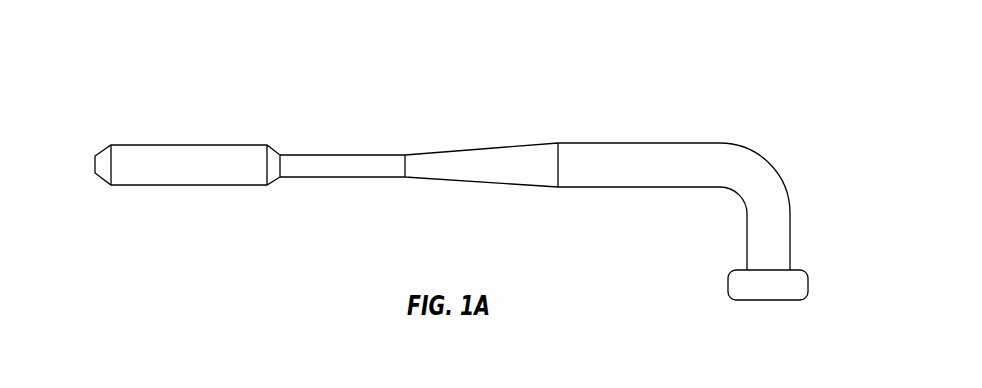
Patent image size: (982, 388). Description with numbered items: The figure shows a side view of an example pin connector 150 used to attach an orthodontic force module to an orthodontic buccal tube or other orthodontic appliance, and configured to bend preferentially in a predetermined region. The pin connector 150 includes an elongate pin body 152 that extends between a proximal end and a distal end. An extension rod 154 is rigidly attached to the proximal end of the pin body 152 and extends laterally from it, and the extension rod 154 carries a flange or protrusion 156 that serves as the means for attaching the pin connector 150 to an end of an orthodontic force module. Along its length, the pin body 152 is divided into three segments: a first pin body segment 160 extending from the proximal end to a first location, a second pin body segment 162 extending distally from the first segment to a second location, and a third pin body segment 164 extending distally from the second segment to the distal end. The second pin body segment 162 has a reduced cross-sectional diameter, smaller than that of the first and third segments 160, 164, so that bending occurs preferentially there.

The pin connector 150 is at (133, 50).
The third pin body segment 164 is at (280, 115).
The second pin body segment 162 is at (555, 115).
The first pin body segment 160 is at (788, 115).
The pin body 152 is at (600, 176).
The extension rod 154 is at (780, 230).
The flange or protrusion 156 is at (770, 292).